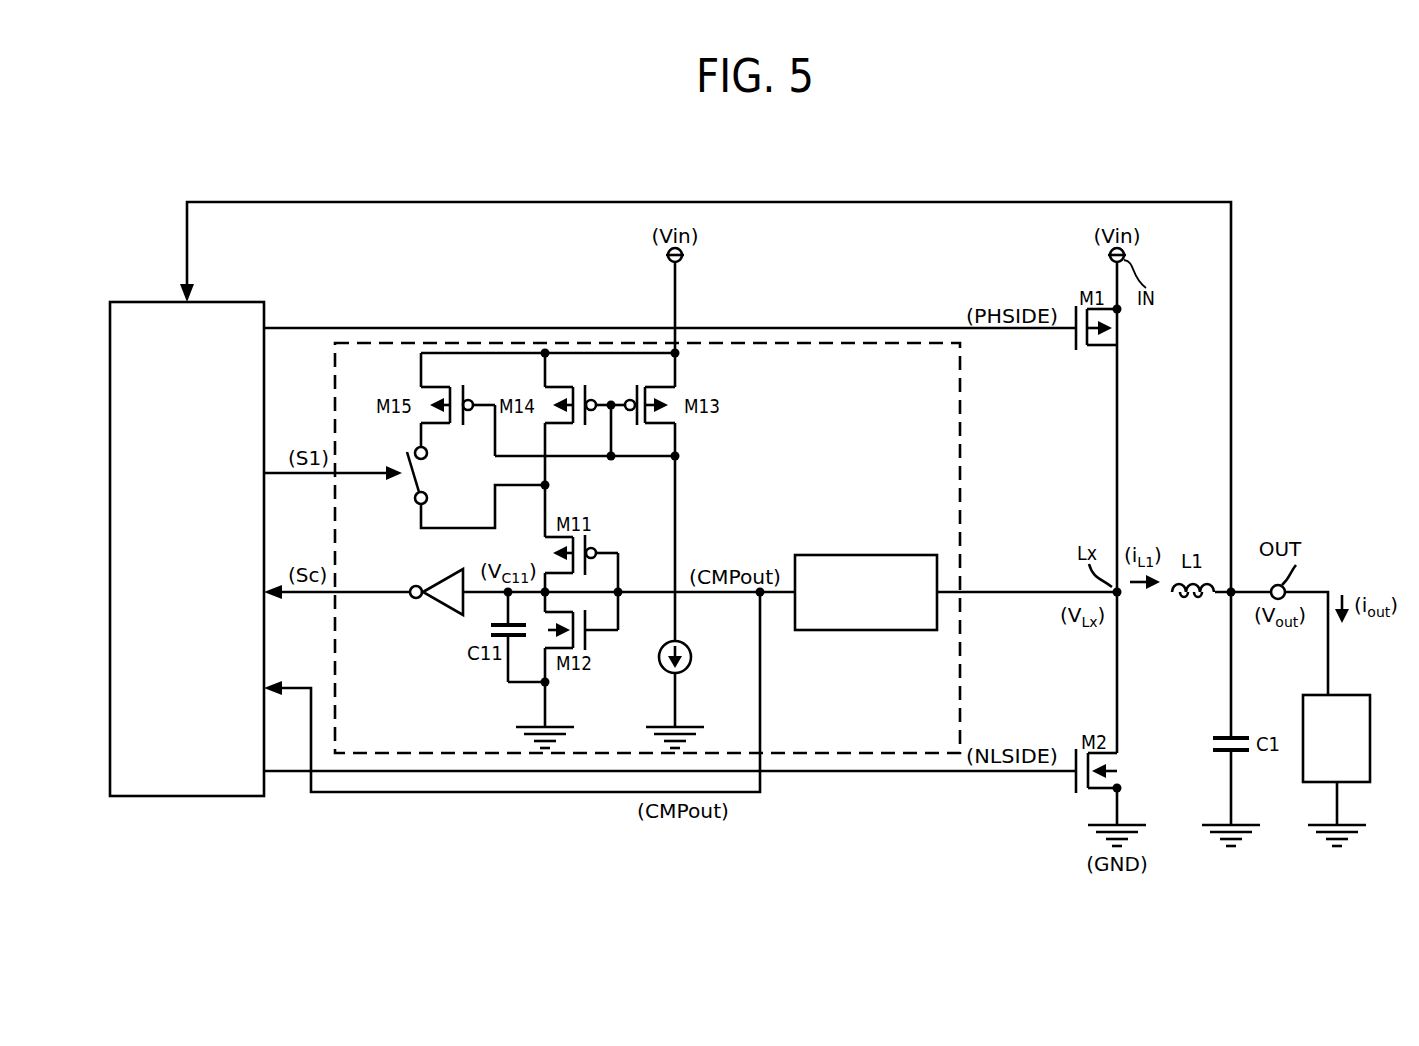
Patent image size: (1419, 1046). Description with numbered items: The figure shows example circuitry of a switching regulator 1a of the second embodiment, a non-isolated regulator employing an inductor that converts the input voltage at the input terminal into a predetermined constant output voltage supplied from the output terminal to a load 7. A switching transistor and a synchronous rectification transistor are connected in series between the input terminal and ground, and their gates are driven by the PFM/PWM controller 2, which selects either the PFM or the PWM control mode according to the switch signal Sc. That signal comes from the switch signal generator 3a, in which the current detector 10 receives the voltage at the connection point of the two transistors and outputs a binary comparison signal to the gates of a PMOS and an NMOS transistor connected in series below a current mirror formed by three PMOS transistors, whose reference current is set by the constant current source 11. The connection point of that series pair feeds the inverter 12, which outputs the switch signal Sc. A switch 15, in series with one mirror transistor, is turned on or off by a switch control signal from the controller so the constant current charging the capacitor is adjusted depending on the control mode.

The switching regulator 1a is at (780, 174).
The PFM/PWM controller 2 is at (248, 302).
The switch signal generator 3a is at (980, 400).
The load 7 is at (1356, 695).
The current detector 10 is at (907, 555).
The constant current source 11 is at (688, 646).
The inverter 12 is at (448, 616).
The switch 15 is at (423, 474).